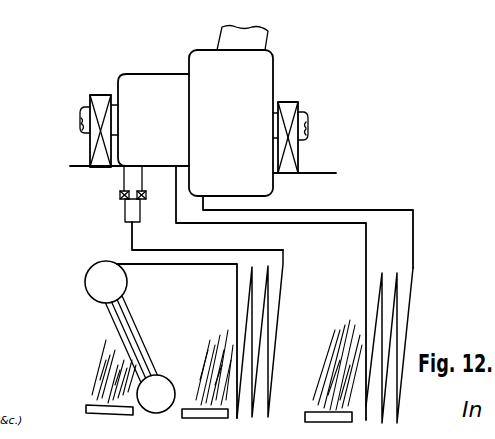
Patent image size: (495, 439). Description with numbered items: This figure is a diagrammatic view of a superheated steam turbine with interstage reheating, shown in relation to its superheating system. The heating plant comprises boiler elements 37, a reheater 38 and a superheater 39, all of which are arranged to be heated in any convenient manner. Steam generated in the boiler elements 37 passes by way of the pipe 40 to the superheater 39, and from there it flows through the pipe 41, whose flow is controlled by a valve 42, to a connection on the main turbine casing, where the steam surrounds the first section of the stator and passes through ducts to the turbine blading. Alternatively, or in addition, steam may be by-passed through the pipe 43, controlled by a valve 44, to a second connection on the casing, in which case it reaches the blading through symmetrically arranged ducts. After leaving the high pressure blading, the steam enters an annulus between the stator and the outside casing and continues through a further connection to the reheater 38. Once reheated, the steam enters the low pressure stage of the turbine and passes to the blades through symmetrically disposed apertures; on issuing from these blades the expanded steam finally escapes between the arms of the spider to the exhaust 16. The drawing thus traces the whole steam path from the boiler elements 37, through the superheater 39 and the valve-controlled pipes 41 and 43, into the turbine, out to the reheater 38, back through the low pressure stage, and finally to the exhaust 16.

The exhaust 16 is at (260, 40).
The boiler elements 37 is at (98, 282).
The reheater 38 is at (398, 304).
The superheater 39 is at (268, 296).
The pipe 40 is at (182, 265).
The pipe 41 is at (124, 212).
The valve 42 is at (120, 193).
The pipe 43 is at (140, 214).
The valve 44 is at (152, 186).